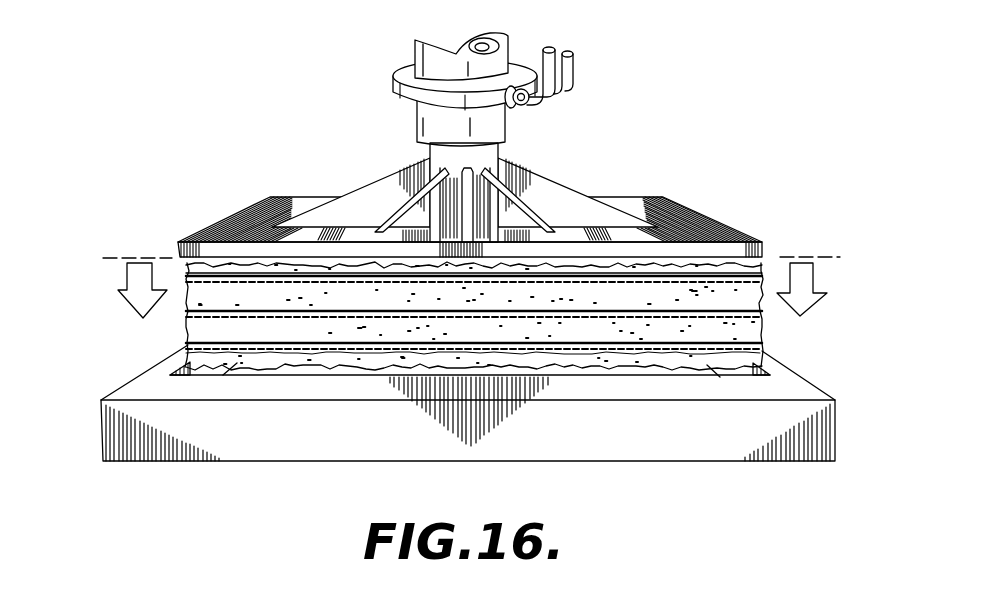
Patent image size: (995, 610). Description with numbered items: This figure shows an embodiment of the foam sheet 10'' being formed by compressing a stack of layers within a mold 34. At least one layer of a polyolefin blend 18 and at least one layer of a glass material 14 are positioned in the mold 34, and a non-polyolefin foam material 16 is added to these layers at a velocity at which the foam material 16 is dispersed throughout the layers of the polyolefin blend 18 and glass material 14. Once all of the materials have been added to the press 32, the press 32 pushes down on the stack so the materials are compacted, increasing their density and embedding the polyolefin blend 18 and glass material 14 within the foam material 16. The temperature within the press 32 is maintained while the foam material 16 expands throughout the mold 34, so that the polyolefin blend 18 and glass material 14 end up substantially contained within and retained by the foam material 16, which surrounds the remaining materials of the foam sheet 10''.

The foam sheet 10'' is at (502, 165).
The glass material 14 is at (763, 268).
The non-polyolefin foam material 16 is at (188, 329).
The polyolefin blend 18 is at (763, 314).
The press 32 is at (503, 127).
The mold 34 is at (714, 441).